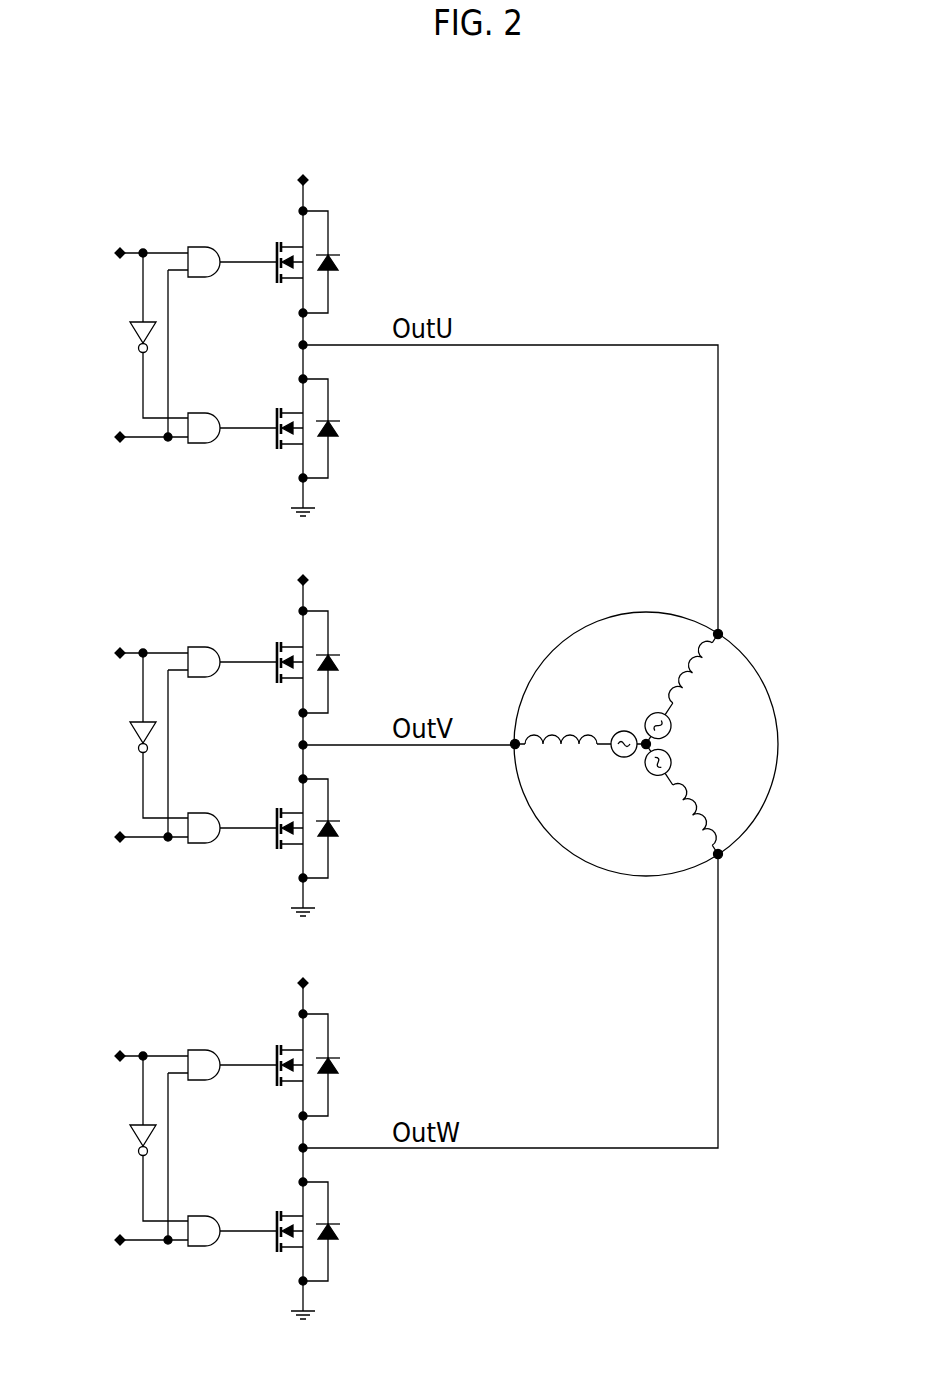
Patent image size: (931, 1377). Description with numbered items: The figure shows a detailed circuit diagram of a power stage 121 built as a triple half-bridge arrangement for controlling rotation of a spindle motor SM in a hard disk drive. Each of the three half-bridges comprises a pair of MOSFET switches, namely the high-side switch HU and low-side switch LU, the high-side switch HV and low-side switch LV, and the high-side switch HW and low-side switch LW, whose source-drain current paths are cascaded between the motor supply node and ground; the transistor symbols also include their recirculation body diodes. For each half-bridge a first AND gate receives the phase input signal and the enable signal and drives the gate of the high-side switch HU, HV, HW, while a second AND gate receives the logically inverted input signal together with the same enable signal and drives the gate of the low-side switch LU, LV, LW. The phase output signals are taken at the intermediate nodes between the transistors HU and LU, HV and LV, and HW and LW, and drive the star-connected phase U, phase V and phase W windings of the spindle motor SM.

The power stage 121 is at (400, 189).
The high-side switch HU is at (296, 246).
The low-side switch LU is at (295, 445).
The high-side switch HV is at (278, 651).
The low-side switch LV is at (280, 835).
The high-side switch HW is at (278, 1054).
The low-side switch LW is at (280, 1239).
The spindle motor SM is at (737, 665).